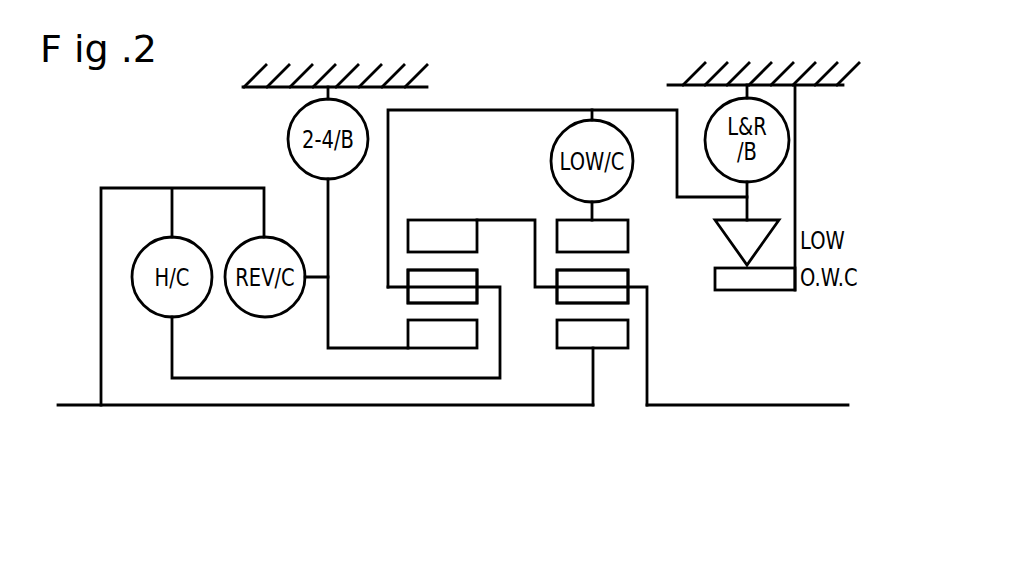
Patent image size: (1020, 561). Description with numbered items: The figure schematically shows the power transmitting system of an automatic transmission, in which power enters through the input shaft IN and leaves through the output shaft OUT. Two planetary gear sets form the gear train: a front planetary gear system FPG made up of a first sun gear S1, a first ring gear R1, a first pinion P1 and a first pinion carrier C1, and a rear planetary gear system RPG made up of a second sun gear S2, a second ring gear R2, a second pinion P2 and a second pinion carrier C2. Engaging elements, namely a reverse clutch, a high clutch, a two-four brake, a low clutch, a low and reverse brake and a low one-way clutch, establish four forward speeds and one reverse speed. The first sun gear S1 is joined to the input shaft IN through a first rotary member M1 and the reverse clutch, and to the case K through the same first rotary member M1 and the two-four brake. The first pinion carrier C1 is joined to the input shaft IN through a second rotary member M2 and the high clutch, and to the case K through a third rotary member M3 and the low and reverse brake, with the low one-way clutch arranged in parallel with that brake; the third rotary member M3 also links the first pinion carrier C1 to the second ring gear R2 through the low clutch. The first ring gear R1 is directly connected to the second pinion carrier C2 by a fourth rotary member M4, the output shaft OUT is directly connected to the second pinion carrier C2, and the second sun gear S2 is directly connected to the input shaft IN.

The case K is at (410, 88).
The first rotary member M1 is at (368, 263).
The second rotary member M2 is at (336, 332).
The third rotary member M3 is at (567, 197).
The fourth rotary member M4 is at (562, 298).
The first ring gear R1 is at (442, 236).
The first pinion carrier C1 is at (494, 287).
The first pinion P1 is at (466, 269).
The first sun gear S1 is at (442, 335).
The second ring gear R2 is at (592, 236).
The second pinion carrier C2 is at (653, 287).
The second pinion P2 is at (620, 269).
The second sun gear S2 is at (592, 362).
The front planetary gear system FPG is at (446, 424).
The rear planetary gear system RPG is at (588, 424).
The input shaft IN is at (325, 392).
The output shaft OUT is at (747, 389).